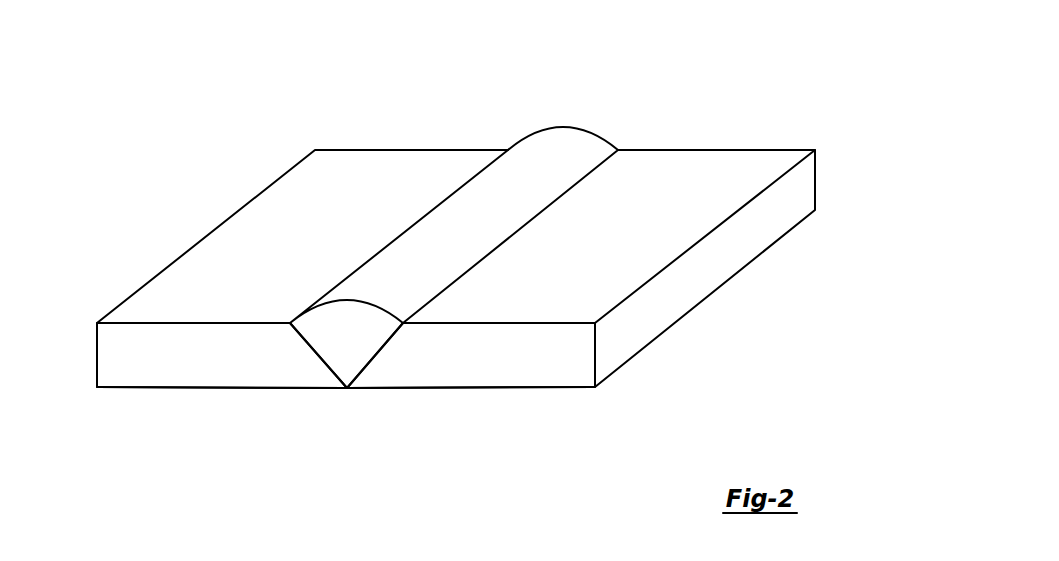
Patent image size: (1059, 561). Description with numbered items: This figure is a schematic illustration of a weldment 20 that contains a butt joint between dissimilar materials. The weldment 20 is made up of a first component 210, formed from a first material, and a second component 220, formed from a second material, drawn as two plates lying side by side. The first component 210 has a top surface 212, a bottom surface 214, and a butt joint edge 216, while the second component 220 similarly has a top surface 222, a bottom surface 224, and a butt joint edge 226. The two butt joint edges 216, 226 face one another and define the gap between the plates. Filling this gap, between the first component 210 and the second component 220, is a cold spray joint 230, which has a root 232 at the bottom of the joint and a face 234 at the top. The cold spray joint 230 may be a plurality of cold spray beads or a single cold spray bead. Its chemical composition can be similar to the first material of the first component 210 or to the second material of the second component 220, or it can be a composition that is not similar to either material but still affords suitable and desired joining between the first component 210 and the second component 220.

The weldment 20 is at (487, 255).
The first component 210 is at (302, 291).
The top surface 212 is at (262, 281).
The bottom surface 214 is at (202, 388).
The butt joint edge 216 is at (313, 358).
The second component 220 is at (583, 294).
The top surface 222 is at (587, 283).
The bottom surface 224 is at (522, 388).
The butt joint edge 226 is at (372, 358).
The cold spray joint 230 is at (454, 268).
The root 232 is at (348, 388).
The face 234 is at (452, 223).